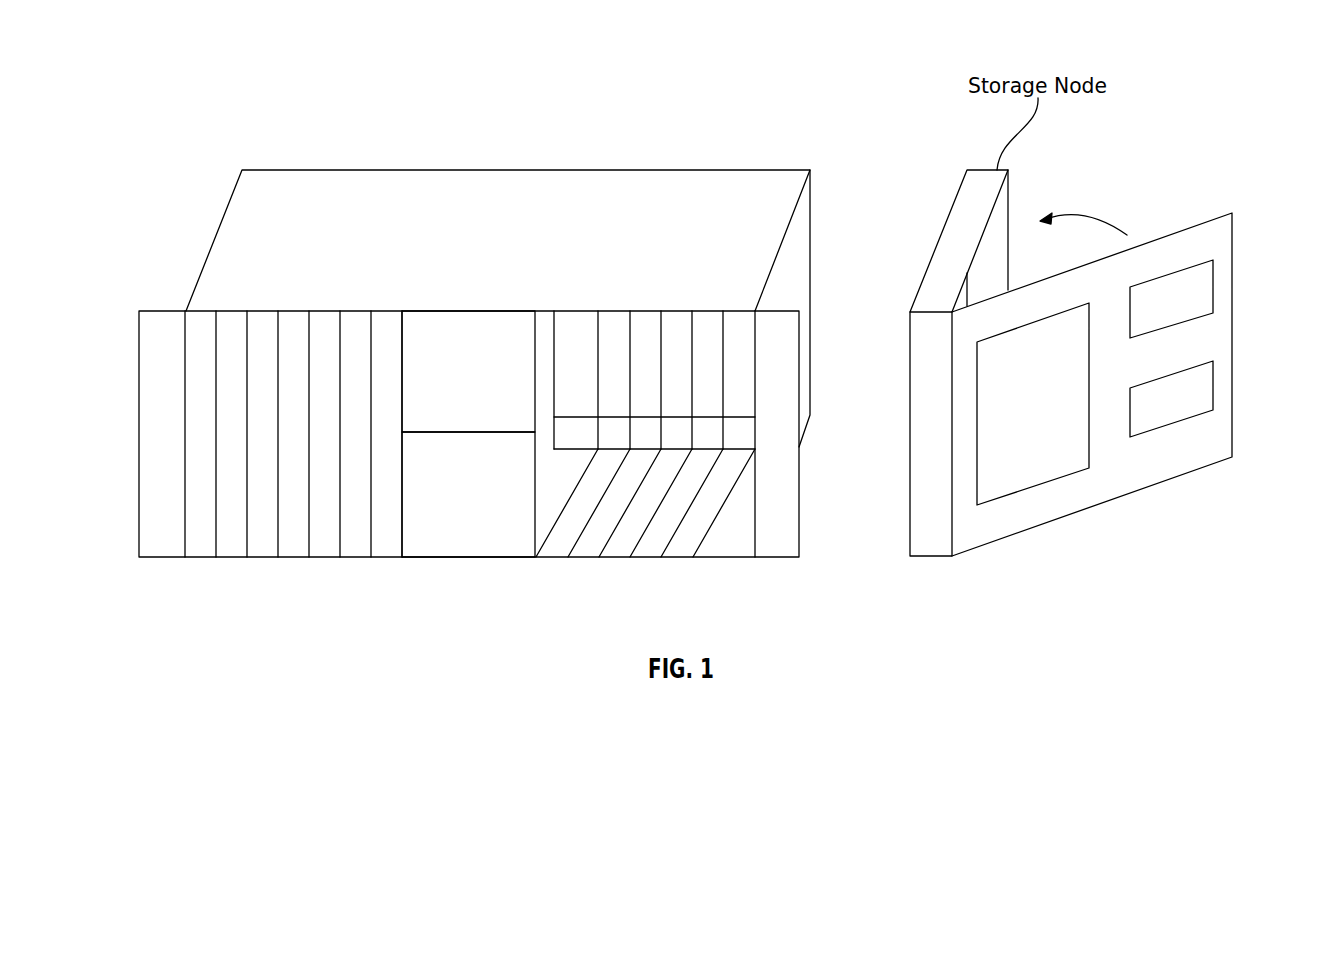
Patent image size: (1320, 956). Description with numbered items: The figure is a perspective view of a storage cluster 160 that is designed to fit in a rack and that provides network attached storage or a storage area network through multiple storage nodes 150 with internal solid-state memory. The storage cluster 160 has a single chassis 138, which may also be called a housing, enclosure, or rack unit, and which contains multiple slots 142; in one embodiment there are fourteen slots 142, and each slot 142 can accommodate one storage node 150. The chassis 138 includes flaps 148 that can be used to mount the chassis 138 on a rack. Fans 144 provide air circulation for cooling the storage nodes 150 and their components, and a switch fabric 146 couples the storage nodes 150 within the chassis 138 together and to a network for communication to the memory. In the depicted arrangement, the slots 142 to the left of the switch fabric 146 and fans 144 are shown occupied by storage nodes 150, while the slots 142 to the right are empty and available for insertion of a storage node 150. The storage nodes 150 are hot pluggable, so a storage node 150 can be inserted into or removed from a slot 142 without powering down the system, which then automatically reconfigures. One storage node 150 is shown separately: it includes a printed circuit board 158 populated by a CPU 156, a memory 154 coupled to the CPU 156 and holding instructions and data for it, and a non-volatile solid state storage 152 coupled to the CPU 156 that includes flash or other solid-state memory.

The storage cluster 160 is at (279, 120).
The chassis 138 is at (308, 170).
The flaps 148 is at (139, 433).
The storage node 150 is at (197, 557).
The switch fabric 146 is at (470, 311).
The fans 144 is at (470, 557).
The slots 142 is at (988, 170).
The printed circuit board 158 is at (1233, 253).
The non-volatile solid state storage 152 is at (1033, 488).
The memory 154 is at (1172, 272).
The CPU 156 is at (1213, 383).